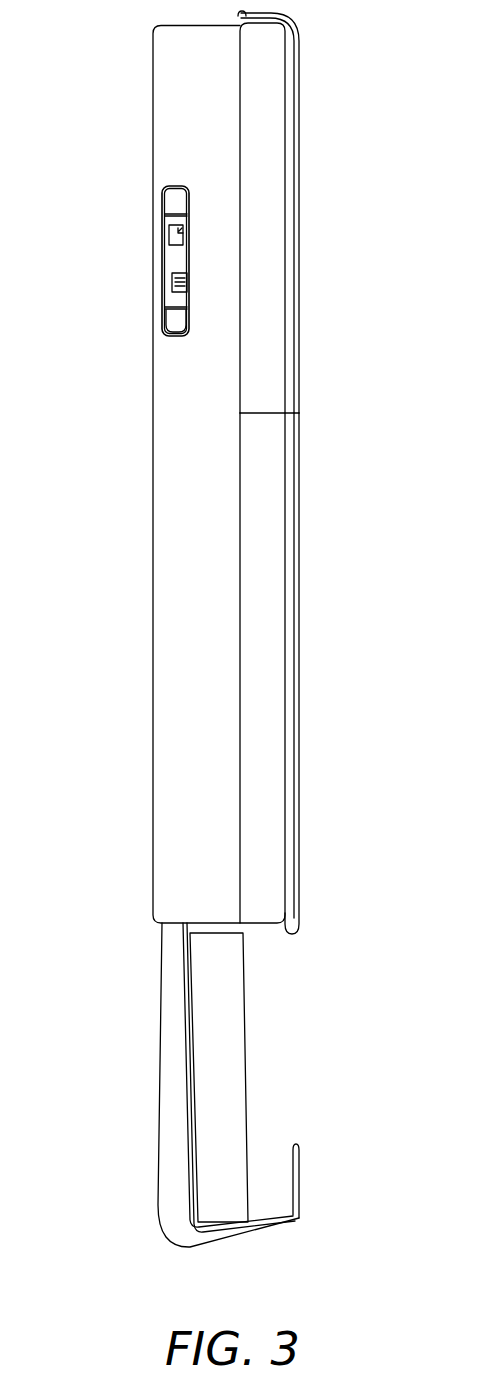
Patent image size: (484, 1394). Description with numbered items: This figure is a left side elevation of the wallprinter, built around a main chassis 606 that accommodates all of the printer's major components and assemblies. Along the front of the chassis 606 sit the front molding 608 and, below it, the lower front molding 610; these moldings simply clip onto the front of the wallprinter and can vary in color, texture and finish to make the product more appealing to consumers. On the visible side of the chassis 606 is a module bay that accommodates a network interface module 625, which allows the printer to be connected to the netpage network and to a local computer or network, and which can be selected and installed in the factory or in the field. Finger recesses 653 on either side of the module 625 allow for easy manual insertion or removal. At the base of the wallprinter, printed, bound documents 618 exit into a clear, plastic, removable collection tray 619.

The main chassis 606 is at (177, 678).
The front molding 608 is at (273, 233).
The lower front molding 610 is at (275, 518).
The printed, bound documents 618 is at (227, 1077).
The collection tray 619 is at (178, 1140).
The network interface module 625 is at (176, 262).
The finger recesses 653 is at (175, 322).